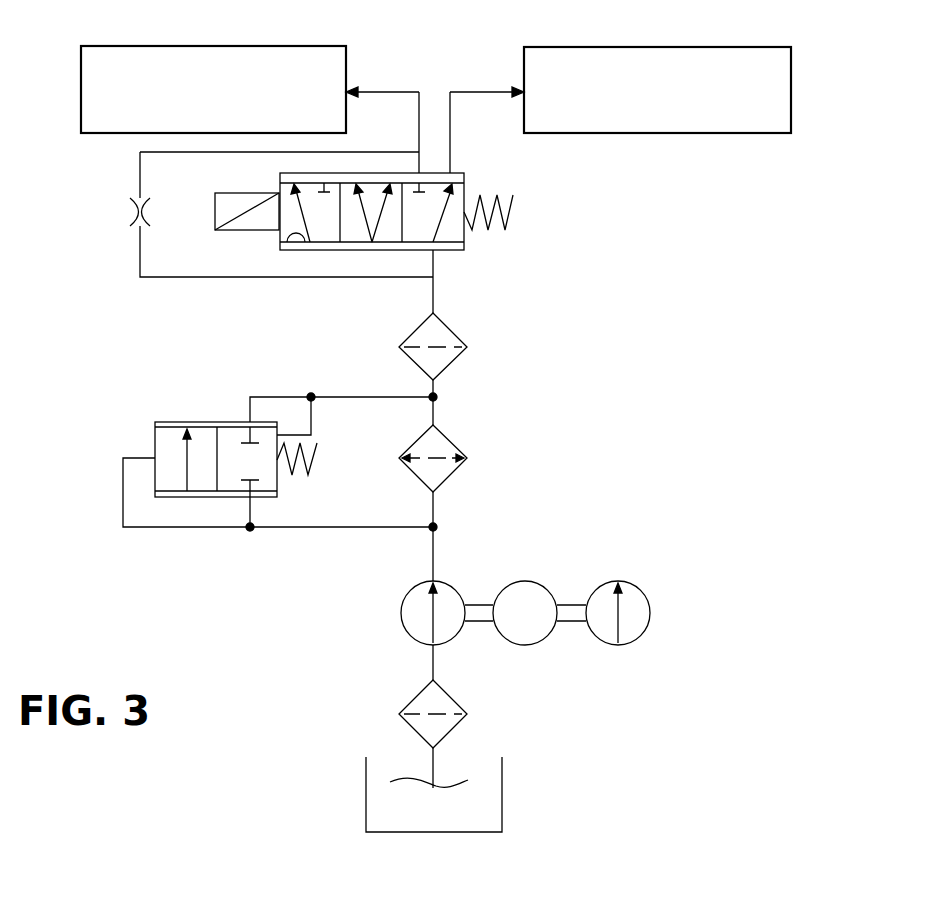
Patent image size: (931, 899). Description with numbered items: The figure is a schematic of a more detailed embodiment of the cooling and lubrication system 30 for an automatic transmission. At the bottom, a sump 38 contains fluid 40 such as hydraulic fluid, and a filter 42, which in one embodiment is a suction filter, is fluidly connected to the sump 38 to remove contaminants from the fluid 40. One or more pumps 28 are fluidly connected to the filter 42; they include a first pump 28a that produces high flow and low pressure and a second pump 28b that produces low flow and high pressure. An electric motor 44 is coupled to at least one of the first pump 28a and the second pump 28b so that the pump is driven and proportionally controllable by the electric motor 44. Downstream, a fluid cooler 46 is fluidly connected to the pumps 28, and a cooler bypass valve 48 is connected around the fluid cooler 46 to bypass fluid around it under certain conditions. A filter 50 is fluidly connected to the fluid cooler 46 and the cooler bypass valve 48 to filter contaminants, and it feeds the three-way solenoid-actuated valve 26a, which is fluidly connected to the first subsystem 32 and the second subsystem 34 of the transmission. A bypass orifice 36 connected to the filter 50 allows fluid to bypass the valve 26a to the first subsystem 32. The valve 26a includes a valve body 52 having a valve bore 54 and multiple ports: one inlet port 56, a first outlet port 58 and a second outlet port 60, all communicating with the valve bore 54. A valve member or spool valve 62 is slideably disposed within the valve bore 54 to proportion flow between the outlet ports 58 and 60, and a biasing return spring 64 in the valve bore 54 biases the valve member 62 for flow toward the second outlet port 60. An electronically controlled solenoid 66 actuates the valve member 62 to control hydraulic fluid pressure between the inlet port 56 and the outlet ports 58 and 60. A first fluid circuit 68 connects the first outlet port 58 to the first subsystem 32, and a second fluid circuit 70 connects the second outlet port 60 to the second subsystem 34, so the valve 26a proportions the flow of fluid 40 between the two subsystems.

The 3-way solenoid-actuated valve 26a is at (457, 258).
The pumps 28 is at (528, 603).
The first pump 28a is at (401, 613).
The second pump 28b is at (650, 613).
The cooling and lubrication system 30 is at (800, 156).
The first subsystem 32 is at (218, 46).
The second subsystem 34 is at (677, 47).
The bypass orifice 36 is at (135, 212).
The sump 38 is at (503, 783).
The fluid 40 is at (443, 788).
The filter 42 is at (450, 695).
The electric motor 44 is at (528, 582).
The fluid cooler 46 is at (450, 437).
The cooler bypass valve 48 is at (200, 422).
The filter 50 is at (450, 323).
The valve body 52 is at (325, 253).
The valve bore 54 is at (287, 242).
The inlet port 56 is at (433, 250).
The first outlet port 58 is at (367, 186).
The second outlet port 60 is at (367, 230).
The valve member 62 is at (388, 228).
The biasing return spring 64 is at (512, 208).
The solenoid 66 is at (217, 210).
The first fluid circuit 68 is at (419, 118).
The second fluid circuit 70 is at (450, 132).